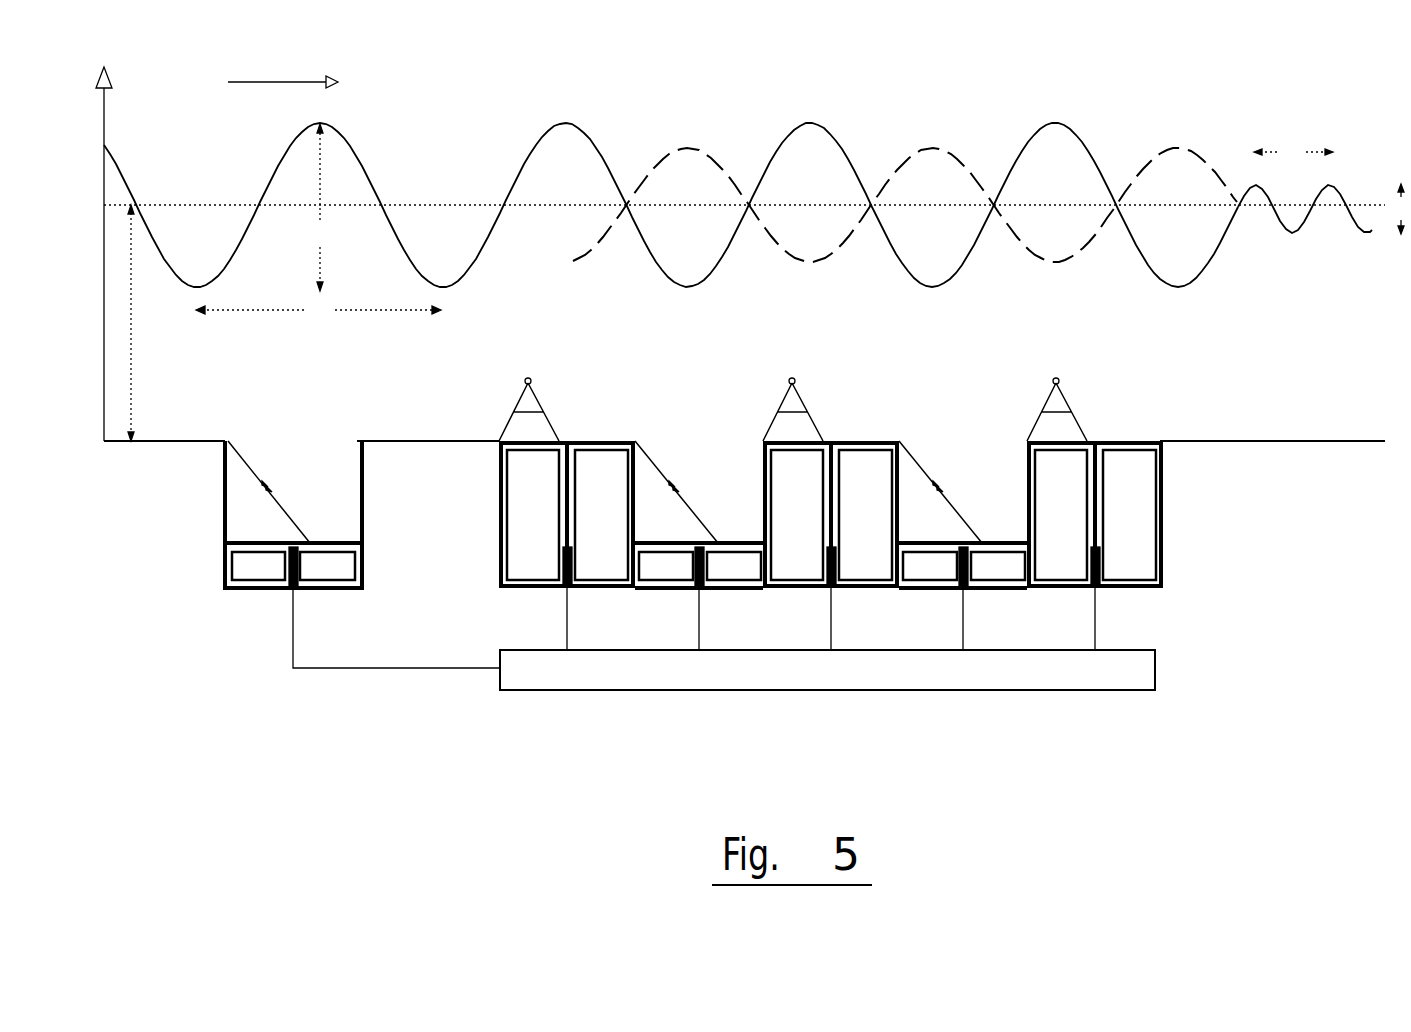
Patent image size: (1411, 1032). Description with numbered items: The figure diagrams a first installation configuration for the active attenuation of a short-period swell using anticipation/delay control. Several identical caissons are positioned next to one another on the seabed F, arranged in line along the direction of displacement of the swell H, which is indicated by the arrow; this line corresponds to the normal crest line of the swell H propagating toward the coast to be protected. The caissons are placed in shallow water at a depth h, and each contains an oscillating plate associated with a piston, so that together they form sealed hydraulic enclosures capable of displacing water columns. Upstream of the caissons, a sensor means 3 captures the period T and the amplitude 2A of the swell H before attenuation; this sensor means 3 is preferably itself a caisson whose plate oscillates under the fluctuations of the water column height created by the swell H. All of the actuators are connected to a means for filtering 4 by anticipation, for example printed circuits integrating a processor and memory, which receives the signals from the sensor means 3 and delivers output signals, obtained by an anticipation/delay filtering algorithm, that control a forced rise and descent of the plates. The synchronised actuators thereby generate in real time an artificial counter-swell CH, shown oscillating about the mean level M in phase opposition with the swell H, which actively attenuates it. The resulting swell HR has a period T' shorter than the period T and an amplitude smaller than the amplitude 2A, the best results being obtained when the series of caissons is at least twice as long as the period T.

The sensor means 3 is at (368, 601).
The means for filtering 4 is at (735, 692).
The seabed F is at (425, 441).
The swell H is at (363, 151).
The mean water level M is at (198, 205).
The counter-swell CH is at (690, 150).
The resulting swell HR is at (1346, 194).
The period T is at (318, 314).
The period of the resulting swell T' is at (1293, 153).
The amplitude 2A is at (321, 207).
The depth h is at (128, 323).